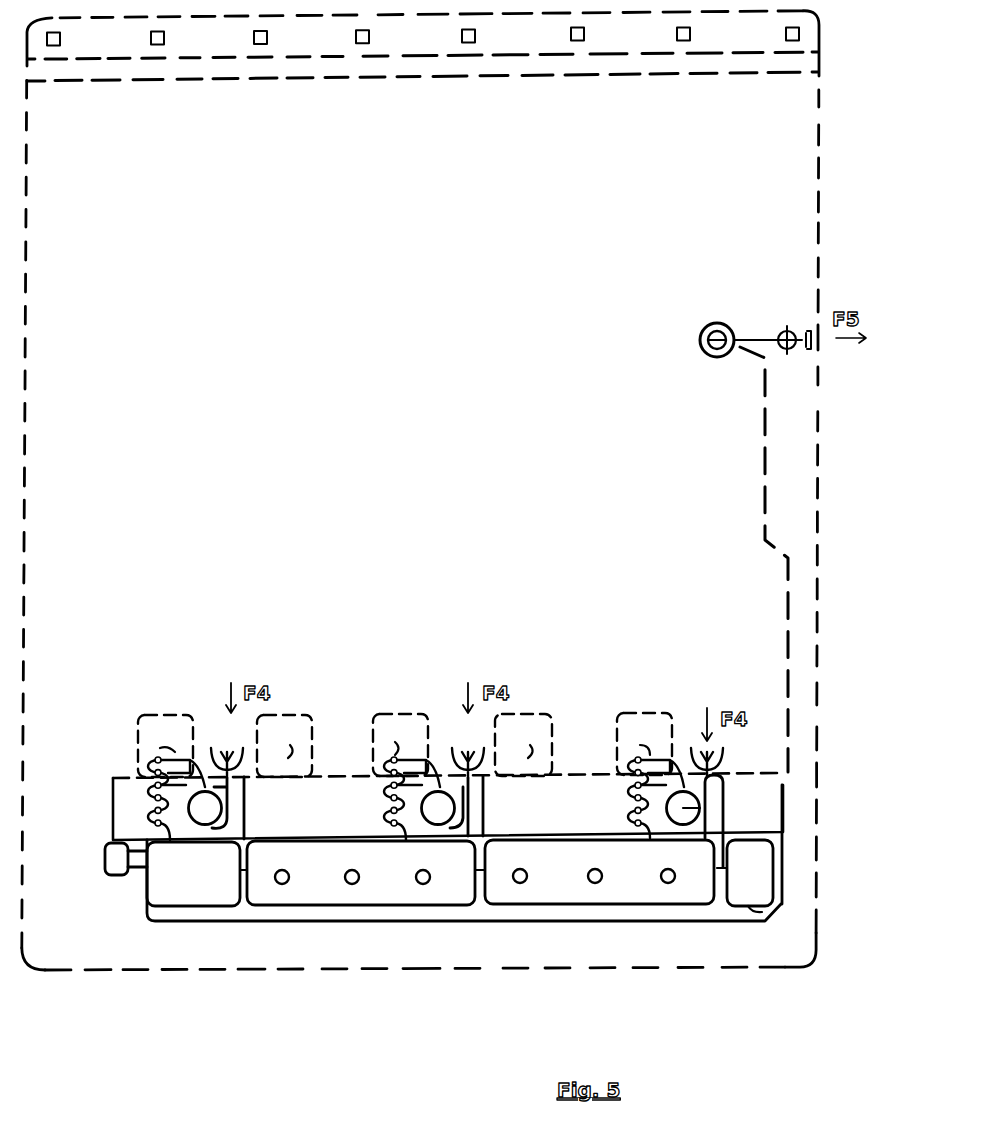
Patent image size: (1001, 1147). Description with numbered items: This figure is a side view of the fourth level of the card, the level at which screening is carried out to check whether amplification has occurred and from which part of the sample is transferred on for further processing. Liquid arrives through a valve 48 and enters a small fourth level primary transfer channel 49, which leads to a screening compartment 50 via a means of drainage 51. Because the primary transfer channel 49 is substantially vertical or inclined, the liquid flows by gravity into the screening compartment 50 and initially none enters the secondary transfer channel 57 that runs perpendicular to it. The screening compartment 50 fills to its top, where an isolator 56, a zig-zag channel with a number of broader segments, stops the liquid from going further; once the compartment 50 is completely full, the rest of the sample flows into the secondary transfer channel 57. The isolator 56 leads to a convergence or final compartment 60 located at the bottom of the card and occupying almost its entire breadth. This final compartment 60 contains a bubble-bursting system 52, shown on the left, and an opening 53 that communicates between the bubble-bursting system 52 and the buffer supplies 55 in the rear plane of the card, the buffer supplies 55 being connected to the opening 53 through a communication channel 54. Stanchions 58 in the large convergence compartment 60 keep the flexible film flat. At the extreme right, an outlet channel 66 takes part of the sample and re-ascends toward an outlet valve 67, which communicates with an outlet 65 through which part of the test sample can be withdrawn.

The valve 48 is at (224, 757).
The fourth level primary transfer channel 49 is at (722, 770).
The screening compartment 50 is at (725, 800).
The means of drainage 51 is at (710, 826).
The bubble-bursting system 52 is at (112, 865).
The opening 53 is at (110, 846).
The communication channel 54 is at (334, 775).
The buffer supplies 55 is at (406, 718).
The isolator 56 is at (150, 760).
The fourth level secondary transfer channel 57 is at (728, 831).
The stanchions 58 is at (423, 878).
The convergence compartment 60 is at (572, 882).
The outlet 65 is at (778, 328).
The outlet channel 66 is at (765, 448).
The outlet valve 67 is at (700, 344).